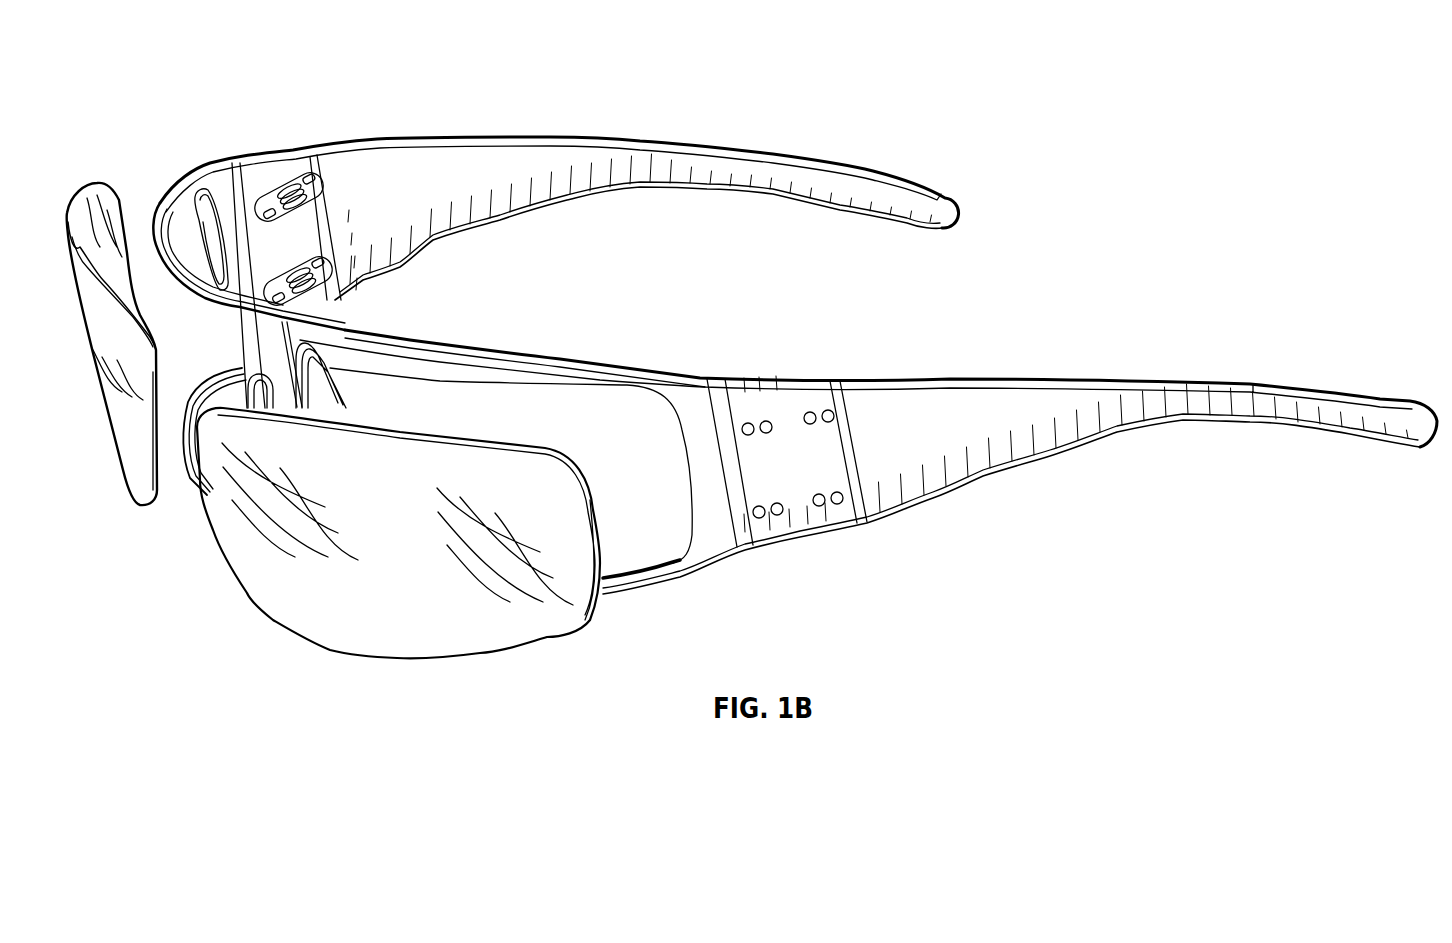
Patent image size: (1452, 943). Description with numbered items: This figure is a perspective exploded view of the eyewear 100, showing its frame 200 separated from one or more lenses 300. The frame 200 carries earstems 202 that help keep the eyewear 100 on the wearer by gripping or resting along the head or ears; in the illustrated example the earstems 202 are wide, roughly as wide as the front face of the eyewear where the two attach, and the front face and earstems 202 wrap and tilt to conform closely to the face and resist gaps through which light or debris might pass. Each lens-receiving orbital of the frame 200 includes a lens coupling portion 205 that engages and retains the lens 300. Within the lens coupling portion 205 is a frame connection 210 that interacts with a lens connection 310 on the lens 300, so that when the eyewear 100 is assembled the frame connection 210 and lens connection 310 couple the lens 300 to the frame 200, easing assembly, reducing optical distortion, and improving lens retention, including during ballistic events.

The eyewear 100 is at (880, 122).
The frame 200 is at (305, 98).
The earstems 202 is at (783, 150).
The lens coupling portion 205 is at (583, 360).
The frame connection 210 is at (625, 570).
The lens 300 is at (283, 612).
The lens connection 310 is at (381, 420).